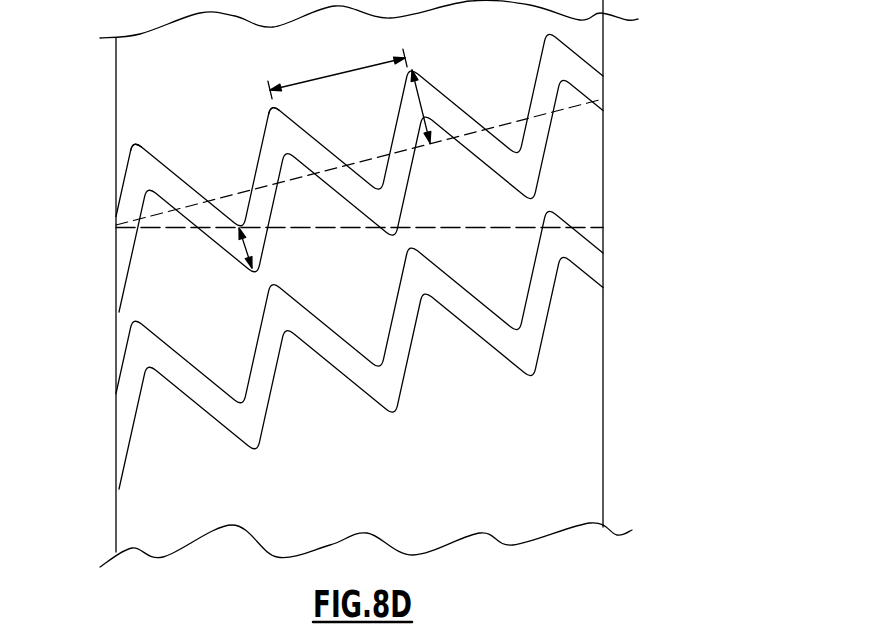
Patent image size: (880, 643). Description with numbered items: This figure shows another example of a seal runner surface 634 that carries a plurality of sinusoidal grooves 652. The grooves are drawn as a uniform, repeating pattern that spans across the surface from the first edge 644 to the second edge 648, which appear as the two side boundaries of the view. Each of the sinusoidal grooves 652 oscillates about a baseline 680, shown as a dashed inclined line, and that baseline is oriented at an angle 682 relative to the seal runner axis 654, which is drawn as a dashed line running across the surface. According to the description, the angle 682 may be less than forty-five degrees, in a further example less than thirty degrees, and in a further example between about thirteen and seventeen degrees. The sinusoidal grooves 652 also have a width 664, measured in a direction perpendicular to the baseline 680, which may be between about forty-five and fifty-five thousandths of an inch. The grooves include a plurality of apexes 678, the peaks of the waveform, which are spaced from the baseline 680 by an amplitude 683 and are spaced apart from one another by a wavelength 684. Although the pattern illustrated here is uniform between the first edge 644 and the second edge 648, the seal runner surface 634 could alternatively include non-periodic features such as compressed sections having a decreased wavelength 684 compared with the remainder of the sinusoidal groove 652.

The seal runner surface 634 is at (391, 19).
The first edge 644 is at (116, 437).
The second edge 648 is at (603, 372).
The sinusoidal grooves 652 is at (124, 165).
The seal runner axis 654 is at (457, 228).
The width 664 is at (250, 250).
The apexes 678 is at (268, 107).
The baseline 680 is at (231, 195).
The angle 682 is at (180, 229).
The amplitude 683 is at (422, 97).
The wavelength 684 is at (358, 67).